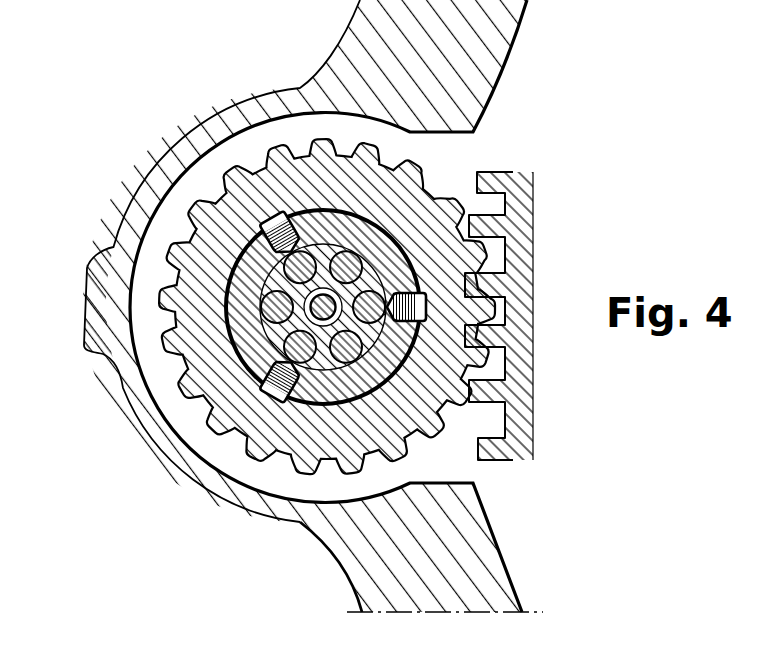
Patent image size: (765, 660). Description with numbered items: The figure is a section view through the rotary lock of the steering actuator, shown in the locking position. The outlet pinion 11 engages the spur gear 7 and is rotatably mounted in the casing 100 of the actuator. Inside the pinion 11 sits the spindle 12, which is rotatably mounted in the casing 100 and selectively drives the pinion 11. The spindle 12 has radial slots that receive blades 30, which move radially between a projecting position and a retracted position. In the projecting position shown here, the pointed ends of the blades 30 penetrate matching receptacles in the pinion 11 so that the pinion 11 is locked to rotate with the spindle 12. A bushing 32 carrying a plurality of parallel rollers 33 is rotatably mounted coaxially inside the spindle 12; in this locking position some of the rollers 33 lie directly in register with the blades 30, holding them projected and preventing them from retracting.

The spur gear 7 is at (488, 174).
The outlet pinion 11 is at (228, 172).
The spindle 12 is at (203, 240).
The blades 30 is at (288, 226).
The bushing 32 is at (343, 218).
The rollers 33 is at (270, 208).
The casing 100 is at (148, 422).